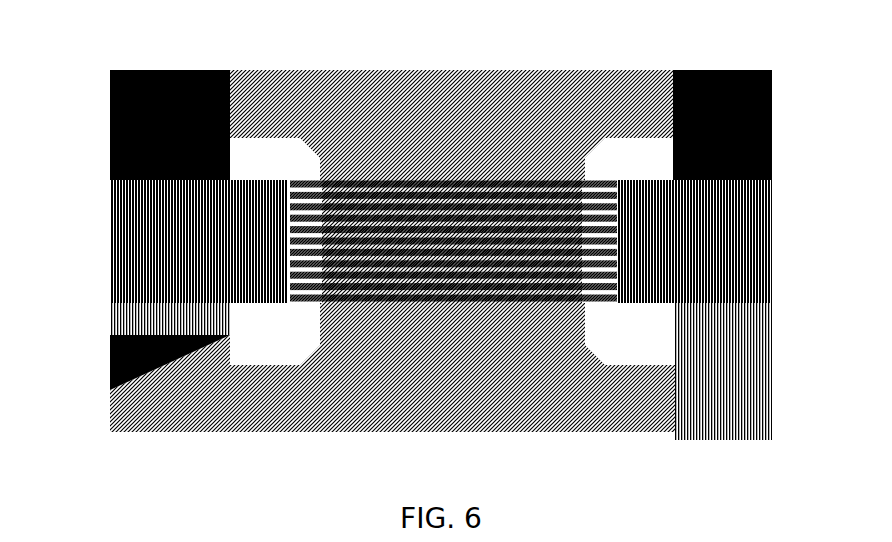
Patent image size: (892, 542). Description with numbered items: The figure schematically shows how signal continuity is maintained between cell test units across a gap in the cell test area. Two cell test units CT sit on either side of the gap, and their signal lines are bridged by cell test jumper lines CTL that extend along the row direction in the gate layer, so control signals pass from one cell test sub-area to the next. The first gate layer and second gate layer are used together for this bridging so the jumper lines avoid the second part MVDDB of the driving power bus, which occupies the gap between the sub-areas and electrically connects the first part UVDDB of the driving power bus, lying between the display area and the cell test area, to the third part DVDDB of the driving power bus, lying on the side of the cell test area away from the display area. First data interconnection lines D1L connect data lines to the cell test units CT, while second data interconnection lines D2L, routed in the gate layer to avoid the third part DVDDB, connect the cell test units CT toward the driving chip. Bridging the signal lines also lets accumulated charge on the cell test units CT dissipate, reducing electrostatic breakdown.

The first data interconnection line D1L is at (441, 125).
The second data interconnection line D2L is at (110, 325).
The cell test unit CT is at (110, 250).
The cell test jumper line CTL is at (593, 174).
The first part of the driving power bus UVDDB is at (268, 102).
The second part of the driving power bus MVDDB is at (431, 162).
The third part of the driving power bus DVDDB is at (246, 436).